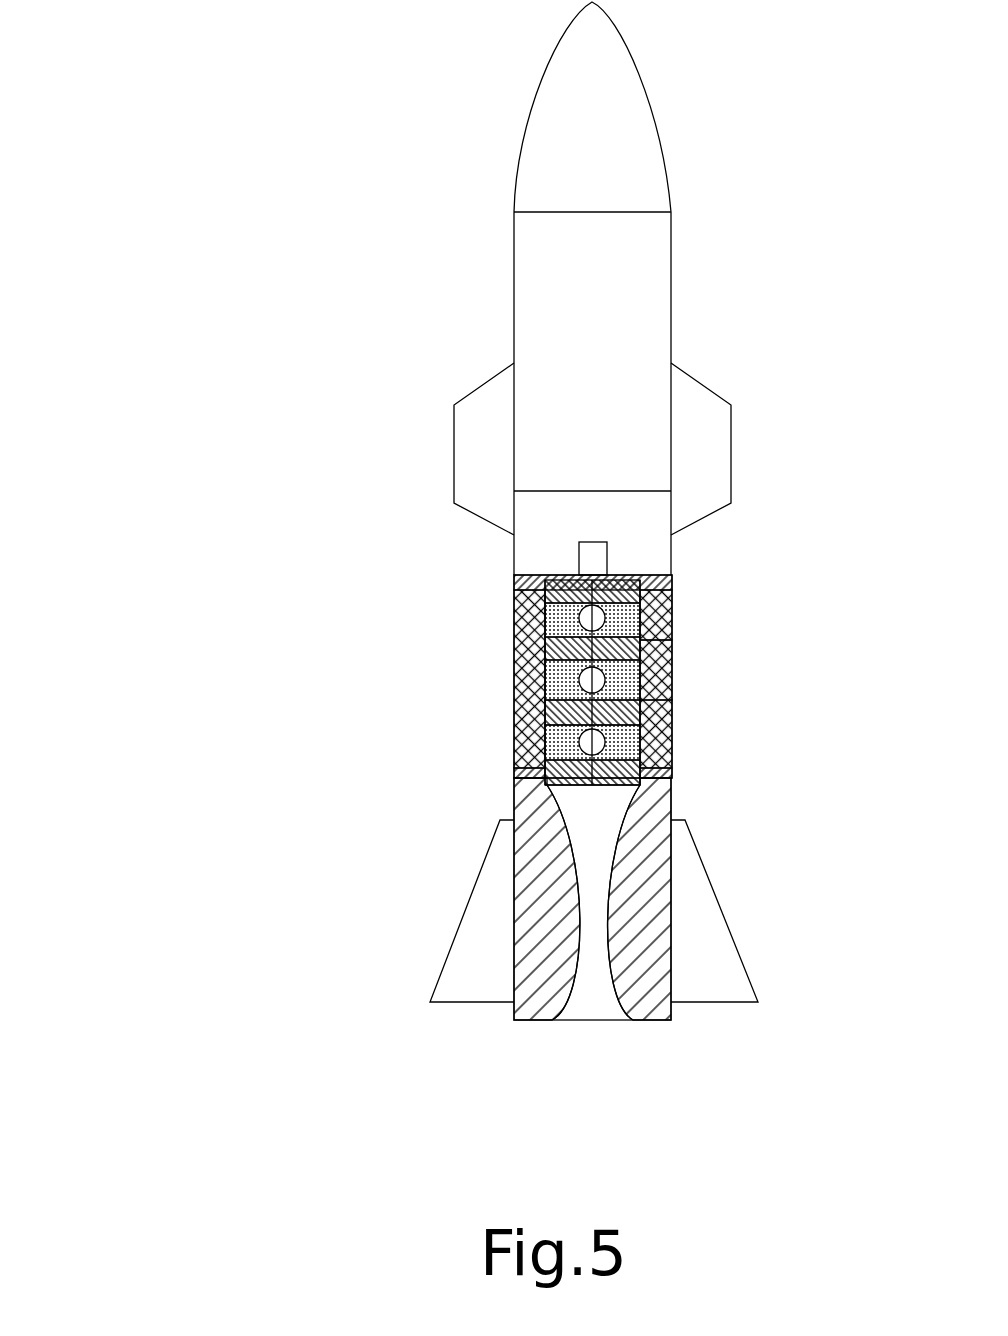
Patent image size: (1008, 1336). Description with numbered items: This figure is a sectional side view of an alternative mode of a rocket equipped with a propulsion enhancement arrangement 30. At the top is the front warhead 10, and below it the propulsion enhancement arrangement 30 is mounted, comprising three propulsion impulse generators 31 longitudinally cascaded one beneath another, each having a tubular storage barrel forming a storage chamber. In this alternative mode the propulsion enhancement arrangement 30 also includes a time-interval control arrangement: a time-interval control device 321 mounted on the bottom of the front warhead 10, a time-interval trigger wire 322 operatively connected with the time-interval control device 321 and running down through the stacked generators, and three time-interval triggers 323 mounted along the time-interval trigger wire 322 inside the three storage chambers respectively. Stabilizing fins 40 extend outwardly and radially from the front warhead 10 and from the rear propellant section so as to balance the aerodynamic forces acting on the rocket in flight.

The front warhead 10 is at (600, 132).
The propulsion enhancement arrangement 30 is at (458, 653).
The propulsion impulse generator 31 is at (515, 740).
The time-interval control device 321 is at (592, 562).
The time-interval trigger wire 322 is at (672, 602).
The time-interval trigger 323 is at (672, 643).
The stabilizing fin 40 is at (703, 383).